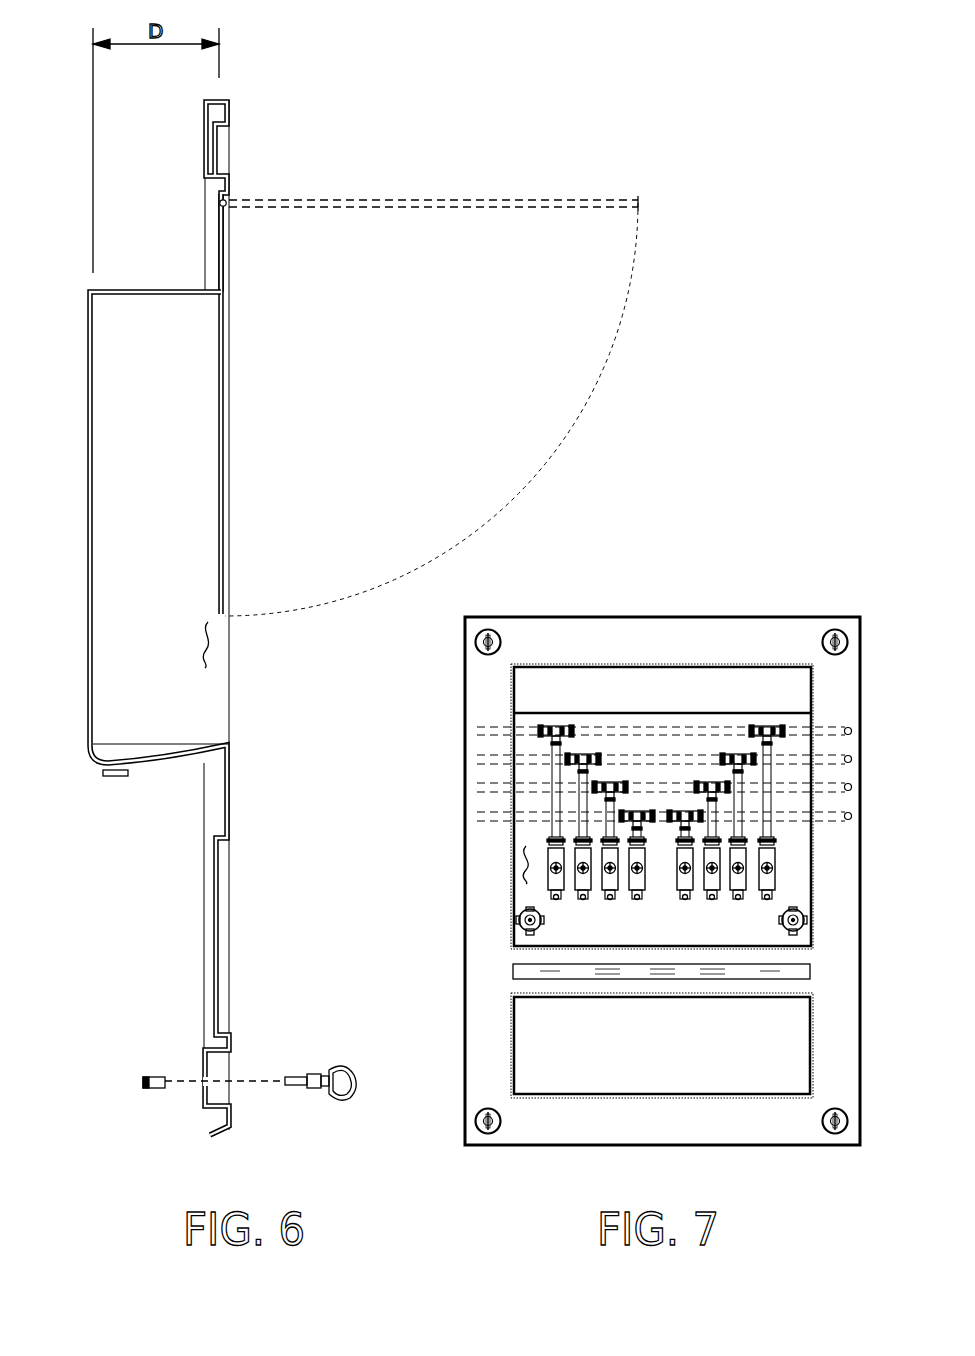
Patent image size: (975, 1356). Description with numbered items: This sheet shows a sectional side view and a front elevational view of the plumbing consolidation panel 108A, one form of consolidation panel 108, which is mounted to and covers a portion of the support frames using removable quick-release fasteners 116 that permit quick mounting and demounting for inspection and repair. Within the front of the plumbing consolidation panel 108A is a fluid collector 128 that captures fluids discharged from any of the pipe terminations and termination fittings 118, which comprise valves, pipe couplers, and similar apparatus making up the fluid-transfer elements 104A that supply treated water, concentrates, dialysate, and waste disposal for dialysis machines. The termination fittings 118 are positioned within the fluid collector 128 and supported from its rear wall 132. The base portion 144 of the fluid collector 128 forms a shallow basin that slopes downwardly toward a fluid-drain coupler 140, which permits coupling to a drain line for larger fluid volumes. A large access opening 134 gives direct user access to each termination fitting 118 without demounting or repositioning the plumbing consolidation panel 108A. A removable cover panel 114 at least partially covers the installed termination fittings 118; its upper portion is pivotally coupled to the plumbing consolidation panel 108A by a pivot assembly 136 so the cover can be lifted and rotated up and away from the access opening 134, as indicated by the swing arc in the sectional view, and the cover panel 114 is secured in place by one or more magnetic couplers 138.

In FIG. 7, the consolidation panel 108 is at (643, 590).
In FIG. 6, the plumbing consolidation panel 108A is at (253, 93).
In FIG. 7, the plumbing consolidation panel 108A is at (771, 590).
In FIG. 6, the removable cover panel 114 is at (229, 374).
In FIG. 6, the removable quick-release fasteners 116 is at (116, 1081).
In FIG. 7, the termination fittings 118 is at (408, 945).
In FIG. 7, the fluid-transfer elements 104A is at (475, 732).
In FIG. 6, the fluid collector 128 is at (195, 690).
In FIG. 7, the fluid collector 128 is at (488, 905).
In FIG. 6, the rear wall 132 is at (96, 460).
In FIG. 6, the access opening 134 is at (211, 646).
In FIG. 7, the access opening 134 is at (522, 862).
In FIG. 6, the pivot assembly 136 is at (232, 196).
In FIG. 6, the magnetic couplers 138 is at (229, 266).
In FIG. 6, the fluid-drain coupler 140 is at (116, 778).
In FIG. 6, the base portion 144 is at (160, 766).